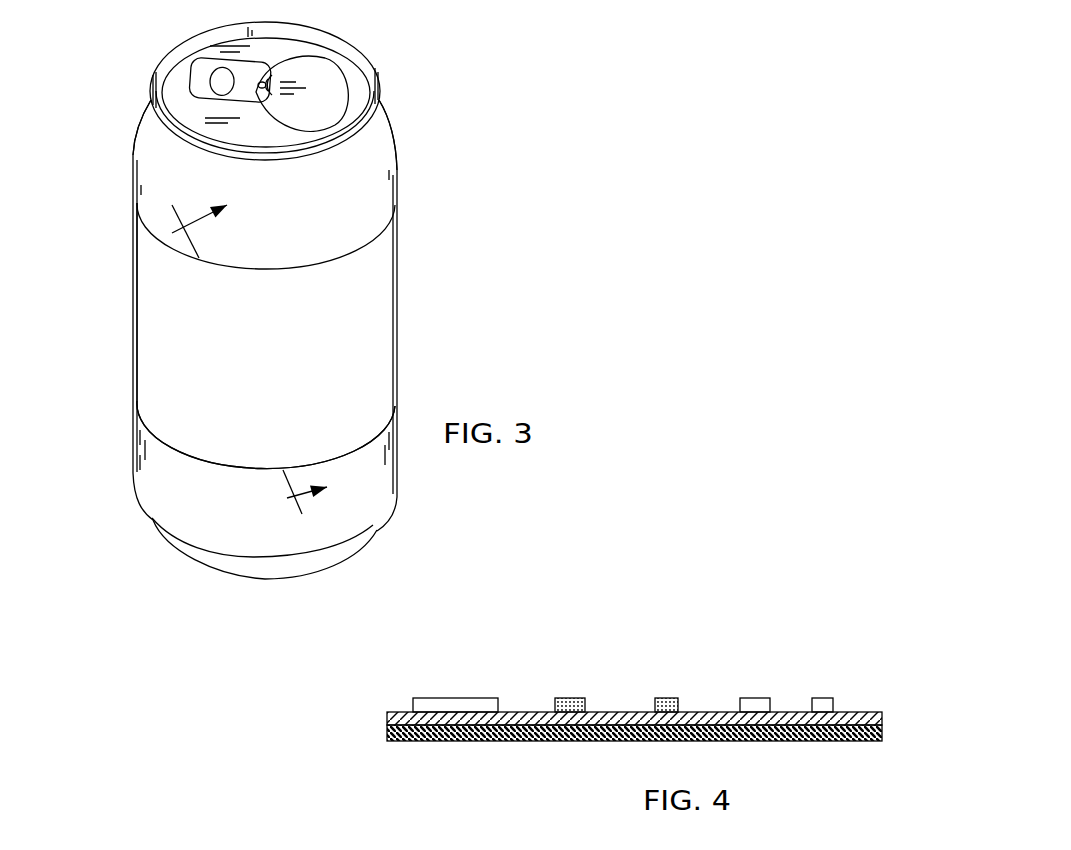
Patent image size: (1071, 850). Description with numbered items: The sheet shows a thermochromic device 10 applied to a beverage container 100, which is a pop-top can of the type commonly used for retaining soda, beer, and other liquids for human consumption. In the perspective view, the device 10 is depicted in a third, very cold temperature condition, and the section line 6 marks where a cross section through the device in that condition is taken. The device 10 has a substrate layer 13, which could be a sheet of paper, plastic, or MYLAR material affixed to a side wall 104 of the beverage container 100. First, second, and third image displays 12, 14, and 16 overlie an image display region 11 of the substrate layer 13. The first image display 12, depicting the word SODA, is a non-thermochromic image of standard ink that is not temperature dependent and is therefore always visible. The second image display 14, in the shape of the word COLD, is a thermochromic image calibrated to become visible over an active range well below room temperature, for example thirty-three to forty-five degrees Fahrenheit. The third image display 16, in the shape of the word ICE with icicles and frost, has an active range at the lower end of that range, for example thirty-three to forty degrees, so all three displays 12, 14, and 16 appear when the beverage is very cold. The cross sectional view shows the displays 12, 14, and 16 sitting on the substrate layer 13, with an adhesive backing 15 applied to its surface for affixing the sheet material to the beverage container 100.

In FIG. 3, the beverage container 100 is at (100, 117).
In FIG. 3, the side wall 104 is at (385, 147).
In FIG. 3, the thermochromic device 10 is at (413, 302).
In FIG. 4, the thermochromic device 10 is at (755, 627).
In FIG. 3, the image display region 11 is at (207, 447).
In FIG. 3, the first image display 12 is at (177, 372).
In FIG. 4, the first image display 12 is at (655, 698).
In FIG. 3, the substrate layer 13 is at (133, 333).
In FIG. 4, the substrate layer 13 is at (387, 712).
In FIG. 3, the second image display 14 is at (387, 375).
In FIG. 4, the second image display 14 is at (757, 698).
In FIG. 4, the adhesive backing 15 is at (470, 740).
In FIG. 3, the third image display 16 is at (173, 298).
In FIG. 4, the third image display 16 is at (443, 698).
In FIG. 3, the section line 6— 6 is at (251, 362).